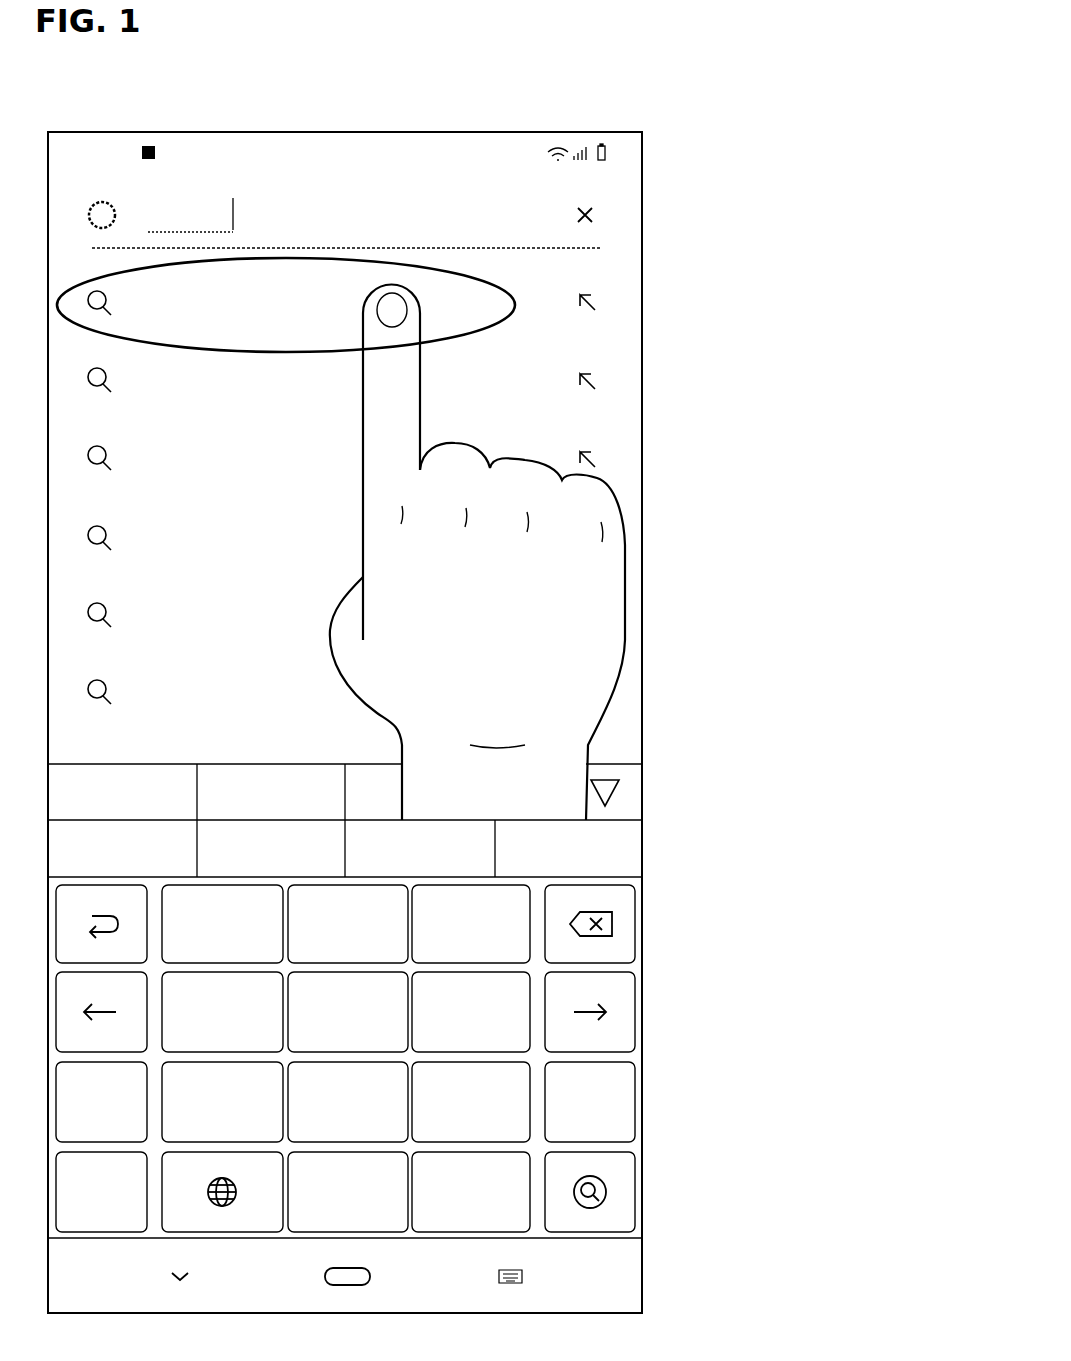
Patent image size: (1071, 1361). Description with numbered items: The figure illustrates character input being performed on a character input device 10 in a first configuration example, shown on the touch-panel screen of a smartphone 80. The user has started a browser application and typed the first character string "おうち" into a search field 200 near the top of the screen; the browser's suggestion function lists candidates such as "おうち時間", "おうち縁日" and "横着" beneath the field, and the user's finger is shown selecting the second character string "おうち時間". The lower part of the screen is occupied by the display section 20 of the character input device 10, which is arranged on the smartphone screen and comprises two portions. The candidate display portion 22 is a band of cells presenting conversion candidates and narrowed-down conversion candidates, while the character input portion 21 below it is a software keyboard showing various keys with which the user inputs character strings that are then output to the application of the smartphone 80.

The character input device 10 is at (862, 741).
The smartphone 80 is at (632, 150).
The search field 200 is at (560, 245).
The display section 20 is at (827, 1243).
The character input portion 21 is at (675, 1228).
The candidate display portion 22 is at (642, 808).